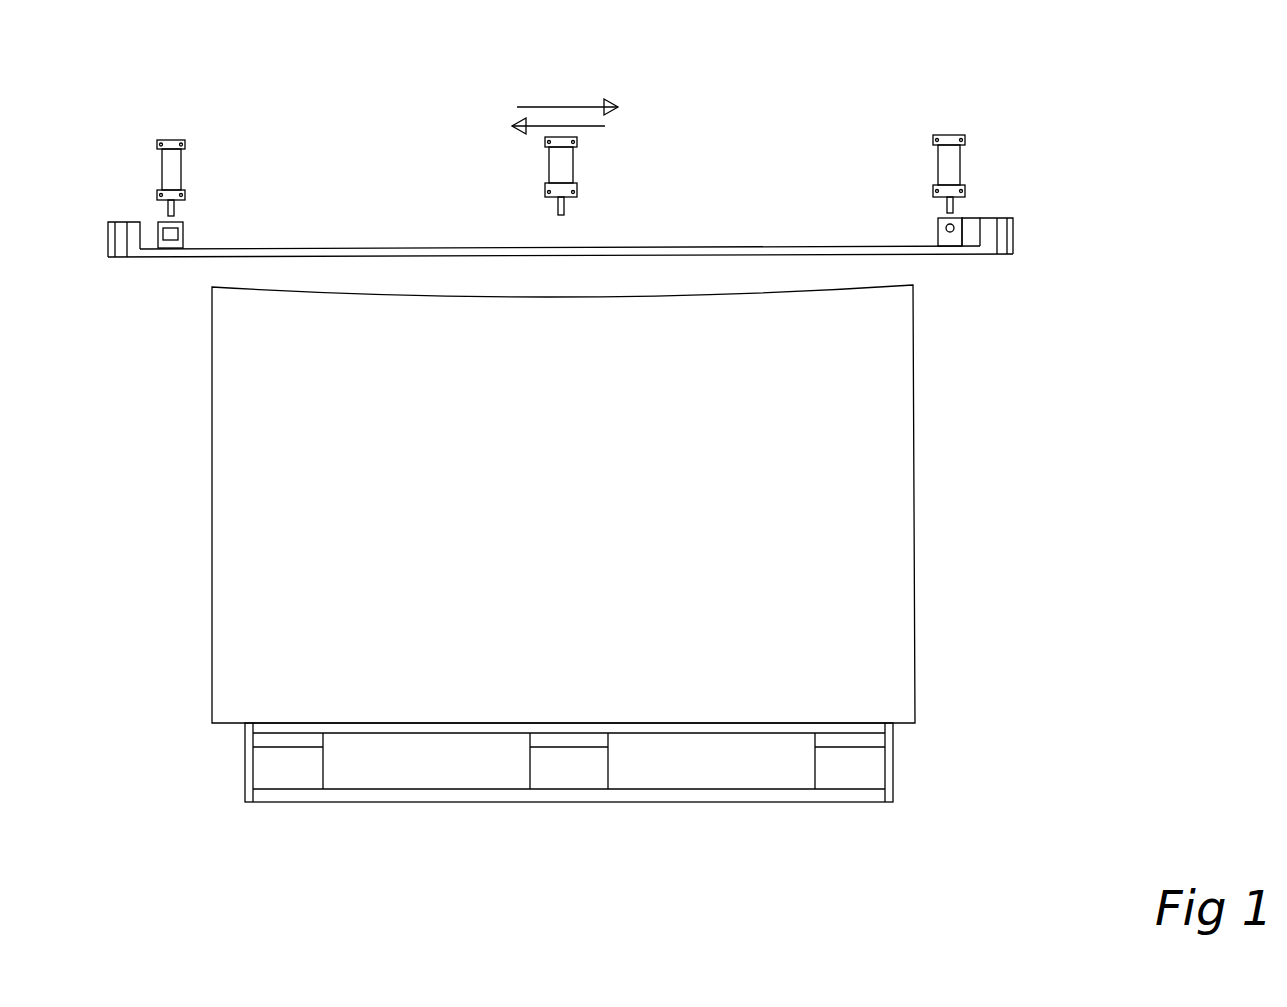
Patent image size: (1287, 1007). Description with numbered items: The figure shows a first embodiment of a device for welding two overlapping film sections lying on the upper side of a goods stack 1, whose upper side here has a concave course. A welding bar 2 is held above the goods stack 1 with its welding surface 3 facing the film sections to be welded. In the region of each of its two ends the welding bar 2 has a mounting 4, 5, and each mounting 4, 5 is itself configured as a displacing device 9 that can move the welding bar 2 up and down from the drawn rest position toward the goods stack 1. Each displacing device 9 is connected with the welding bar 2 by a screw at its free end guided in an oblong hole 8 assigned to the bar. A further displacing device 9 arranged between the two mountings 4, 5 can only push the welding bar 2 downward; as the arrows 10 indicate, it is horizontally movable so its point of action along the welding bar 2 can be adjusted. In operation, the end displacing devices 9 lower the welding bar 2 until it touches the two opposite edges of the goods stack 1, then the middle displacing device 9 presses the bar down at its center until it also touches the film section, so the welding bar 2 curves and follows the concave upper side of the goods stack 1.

The goods stack 1 is at (598, 526).
The welding bar 2 is at (773, 237).
The welding surface 3 is at (968, 258).
The mounting 4 is at (150, 170).
The mounting 5 is at (965, 175).
The oblong hole 8 is at (167, 232).
The displacing device 9 is at (185, 170).
The arrows 10 is at (557, 107).